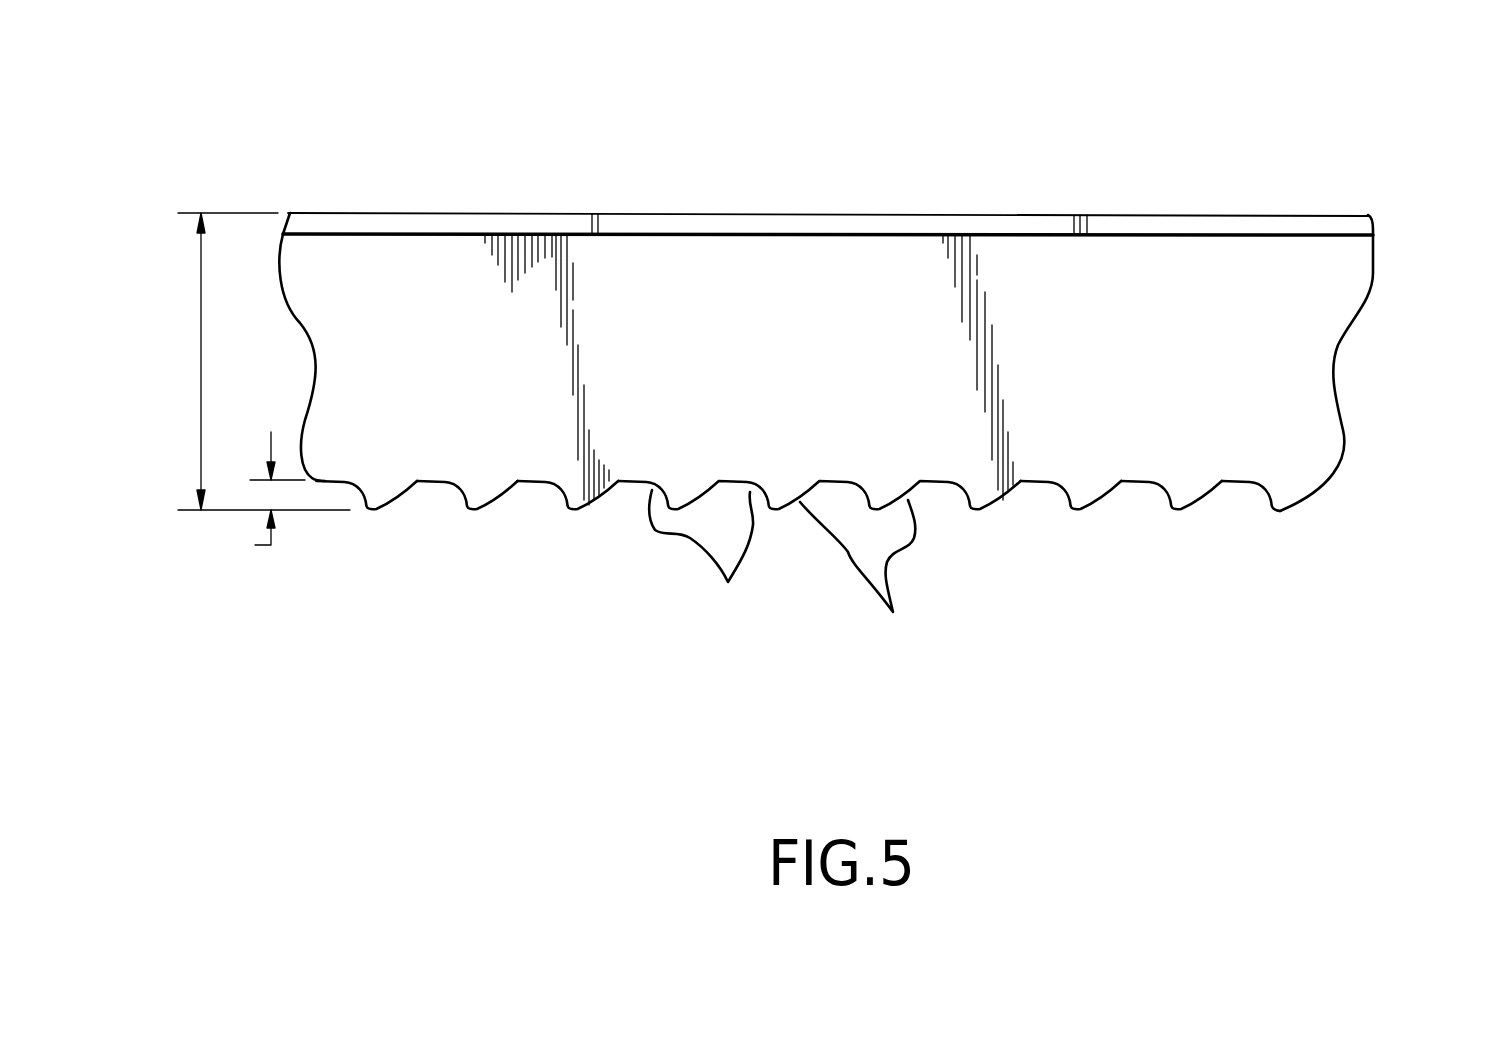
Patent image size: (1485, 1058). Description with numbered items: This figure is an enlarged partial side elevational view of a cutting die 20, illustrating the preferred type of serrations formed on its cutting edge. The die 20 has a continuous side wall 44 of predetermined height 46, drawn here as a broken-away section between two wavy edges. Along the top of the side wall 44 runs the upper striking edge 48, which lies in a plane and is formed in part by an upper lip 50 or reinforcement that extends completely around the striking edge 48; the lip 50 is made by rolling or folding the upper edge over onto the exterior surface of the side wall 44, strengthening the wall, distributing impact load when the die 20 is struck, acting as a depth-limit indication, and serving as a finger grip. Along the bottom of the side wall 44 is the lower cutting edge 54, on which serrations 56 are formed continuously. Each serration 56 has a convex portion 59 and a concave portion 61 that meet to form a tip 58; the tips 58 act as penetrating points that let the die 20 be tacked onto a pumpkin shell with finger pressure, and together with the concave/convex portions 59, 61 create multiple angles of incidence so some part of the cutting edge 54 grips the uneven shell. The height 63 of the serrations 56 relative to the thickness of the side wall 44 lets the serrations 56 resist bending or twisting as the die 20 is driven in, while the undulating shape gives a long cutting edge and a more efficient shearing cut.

The cutting die 20 is at (819, 364).
The side wall 44 is at (1300, 338).
The predetermined height 46 is at (264, 361).
The upper striking edge 48 is at (790, 212).
The upper lip 50 is at (1337, 226).
The lower cutting edge 54 is at (1182, 538).
The serrations 56 is at (380, 488).
The tip 58 is at (567, 510).
The convex portion 59 is at (858, 584).
The concave portion 61 is at (701, 559).
The height of the serrations 63 is at (260, 497).